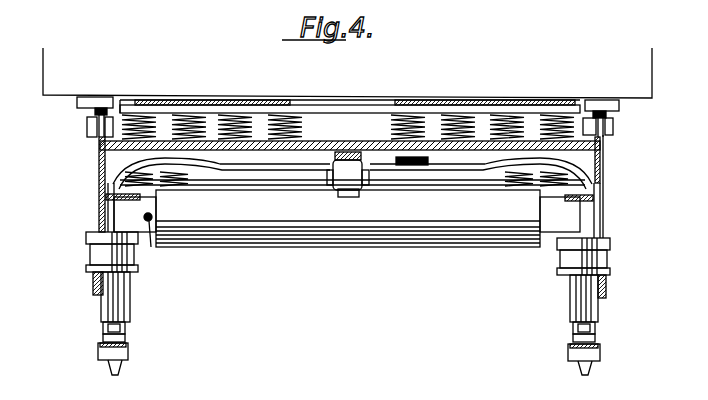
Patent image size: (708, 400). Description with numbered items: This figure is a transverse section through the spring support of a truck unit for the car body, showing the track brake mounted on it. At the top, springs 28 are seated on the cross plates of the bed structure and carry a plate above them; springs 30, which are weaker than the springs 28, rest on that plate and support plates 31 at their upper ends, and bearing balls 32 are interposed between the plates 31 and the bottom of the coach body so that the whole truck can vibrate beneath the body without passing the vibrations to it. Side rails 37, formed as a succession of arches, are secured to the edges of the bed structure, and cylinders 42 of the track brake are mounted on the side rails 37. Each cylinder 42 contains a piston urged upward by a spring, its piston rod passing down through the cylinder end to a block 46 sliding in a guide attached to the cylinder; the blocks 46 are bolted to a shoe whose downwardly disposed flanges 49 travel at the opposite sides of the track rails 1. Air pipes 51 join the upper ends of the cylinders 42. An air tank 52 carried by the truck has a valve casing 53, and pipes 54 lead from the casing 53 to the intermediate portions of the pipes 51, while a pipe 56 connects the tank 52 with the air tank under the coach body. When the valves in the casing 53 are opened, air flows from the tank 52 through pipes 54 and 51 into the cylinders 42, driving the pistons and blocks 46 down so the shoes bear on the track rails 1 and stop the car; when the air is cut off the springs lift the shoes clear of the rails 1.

The track rail 1 is at (582, 366).
The spring 28 is at (226, 164).
The spring 30 is at (472, 106).
The plate 31 is at (345, 110).
The bearing ball 32 is at (243, 101).
The side rail 37 is at (102, 200).
The cylinder 42 is at (608, 252).
The block 46 is at (126, 334).
The flange 49 is at (129, 352).
The air pipe 51 is at (112, 213).
The air tank 52 is at (378, 240).
The valve casing 53 is at (342, 176).
The pipe 54 is at (458, 172).
The pipe 56 is at (151, 247).